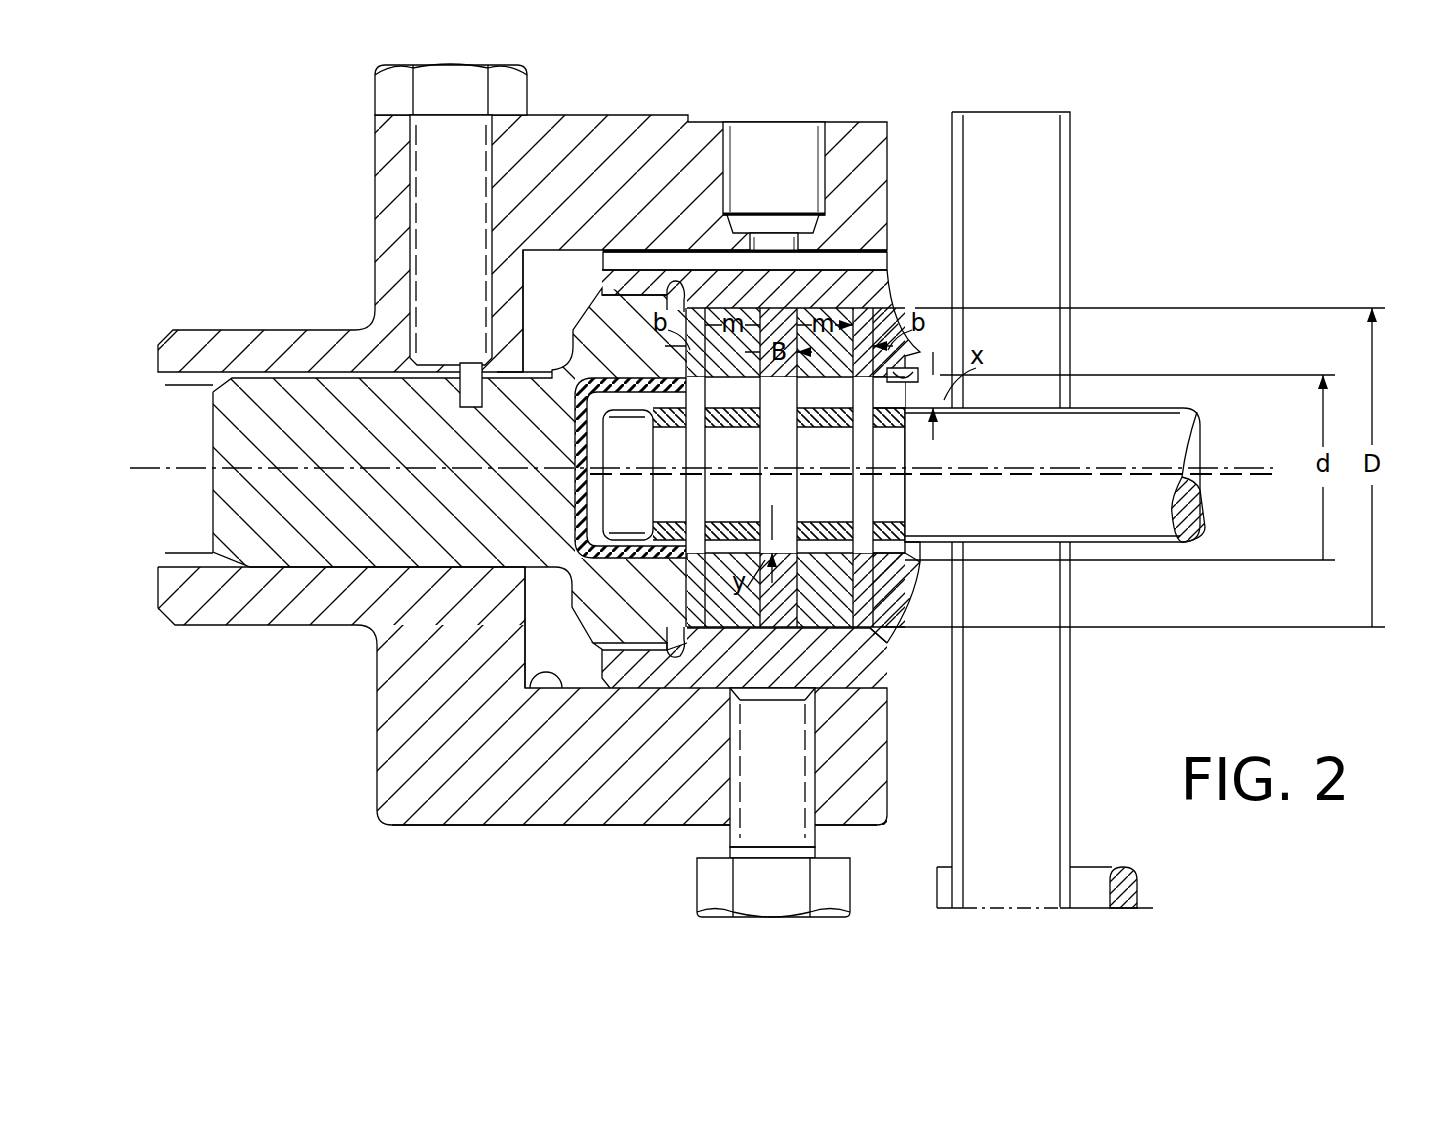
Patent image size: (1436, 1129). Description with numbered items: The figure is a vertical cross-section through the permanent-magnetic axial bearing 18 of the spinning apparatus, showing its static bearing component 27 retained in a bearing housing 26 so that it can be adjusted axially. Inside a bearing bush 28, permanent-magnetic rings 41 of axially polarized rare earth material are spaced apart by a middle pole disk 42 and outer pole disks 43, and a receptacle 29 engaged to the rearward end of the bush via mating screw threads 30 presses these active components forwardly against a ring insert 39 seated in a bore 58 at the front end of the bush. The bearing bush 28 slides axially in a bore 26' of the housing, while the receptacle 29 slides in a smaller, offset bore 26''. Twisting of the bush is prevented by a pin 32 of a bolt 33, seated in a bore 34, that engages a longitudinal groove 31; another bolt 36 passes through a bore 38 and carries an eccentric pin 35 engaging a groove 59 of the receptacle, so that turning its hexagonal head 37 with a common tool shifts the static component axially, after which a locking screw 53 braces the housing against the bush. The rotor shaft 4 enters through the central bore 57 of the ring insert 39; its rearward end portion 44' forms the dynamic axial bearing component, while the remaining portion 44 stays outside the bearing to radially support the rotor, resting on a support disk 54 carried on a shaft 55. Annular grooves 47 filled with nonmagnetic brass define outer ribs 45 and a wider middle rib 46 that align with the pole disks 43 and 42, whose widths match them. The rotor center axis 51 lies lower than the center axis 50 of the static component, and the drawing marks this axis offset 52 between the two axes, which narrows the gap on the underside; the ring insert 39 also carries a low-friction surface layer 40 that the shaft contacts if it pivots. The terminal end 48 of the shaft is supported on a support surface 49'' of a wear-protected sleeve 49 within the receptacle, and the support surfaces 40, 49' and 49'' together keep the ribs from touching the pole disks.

The rotor shaft 4 is at (1142, 453).
The axial bearing 18 is at (543, 841).
The bearing housing 26 is at (522, 729).
The bore 26' is at (522, 494).
The smaller bore 26'' is at (450, 488).
The static bearing component 27 is at (918, 612).
The bearing bush 28 is at (885, 690).
The receptacle 29 is at (345, 565).
The screw threads 30 is at (595, 646).
The longitudinal groove 31 is at (875, 262).
The pin 32 is at (772, 245).
The bolt 33 is at (795, 135).
The bore 34 is at (727, 158).
The pin 35 is at (462, 380).
The bolt 36 is at (452, 260).
The hexagonal head 37 is at (402, 94).
The bore 38 is at (410, 178).
The ring insert 39 is at (916, 560).
The surface layer 40 is at (924, 398).
The permanent-magnetic rings 41 is at (784, 520).
The middle pole disk 42 is at (777, 383).
The outer pole disks 43 is at (862, 378).
The remaining portion of the shaft 44 is at (1137, 402).
The axial bearing portion 44' is at (907, 664).
The outer ribs 45 is at (697, 450).
The middle rib 46 is at (780, 493).
The annular grooves 47 is at (828, 417).
The terminal end 48 is at (590, 497).
The sleeve 49 is at (556, 475).
The support surface 49' is at (619, 433).
The support surface 49'' is at (634, 518).
The center axis 50 is at (1264, 466).
The center axis 51 is at (1268, 476).
The axis offset 52 is at (1072, 477).
The locking screw 53 is at (818, 890).
The support disk 54 is at (1040, 733).
The shaft 55 is at (1105, 870).
The central bore 57 is at (913, 545).
The bore 58 is at (916, 330).
The groove 59 is at (512, 406).